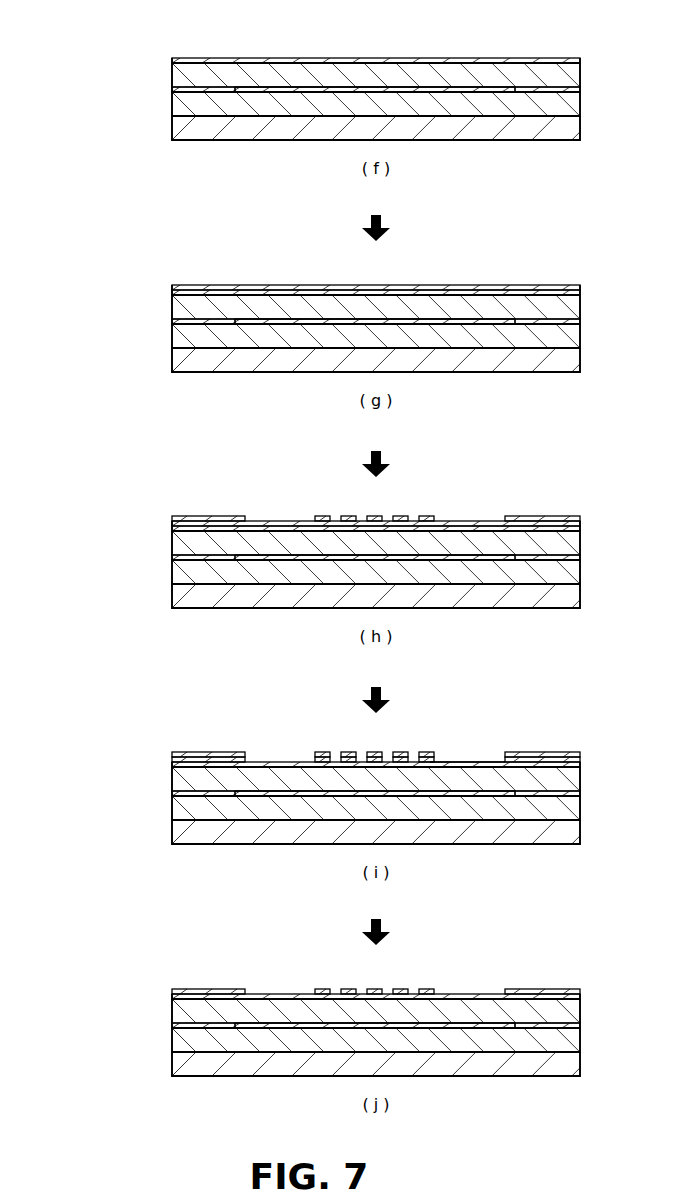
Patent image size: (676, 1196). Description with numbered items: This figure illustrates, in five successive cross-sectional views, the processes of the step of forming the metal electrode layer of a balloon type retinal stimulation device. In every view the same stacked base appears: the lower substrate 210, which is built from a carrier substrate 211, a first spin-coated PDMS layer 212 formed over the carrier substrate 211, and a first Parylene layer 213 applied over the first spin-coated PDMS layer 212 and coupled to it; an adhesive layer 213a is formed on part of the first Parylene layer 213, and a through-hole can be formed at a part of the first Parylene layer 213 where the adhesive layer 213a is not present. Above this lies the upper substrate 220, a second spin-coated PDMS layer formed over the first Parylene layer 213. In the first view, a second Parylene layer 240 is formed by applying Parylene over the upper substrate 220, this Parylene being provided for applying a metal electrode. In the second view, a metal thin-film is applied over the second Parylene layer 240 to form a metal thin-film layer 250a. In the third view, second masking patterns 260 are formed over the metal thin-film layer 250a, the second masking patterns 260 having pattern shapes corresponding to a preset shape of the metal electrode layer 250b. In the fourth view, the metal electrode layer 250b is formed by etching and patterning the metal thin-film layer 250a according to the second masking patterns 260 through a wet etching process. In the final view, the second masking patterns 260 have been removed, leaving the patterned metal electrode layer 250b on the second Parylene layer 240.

The lower substrate 210 is at (309, 595).
The carrier substrate 211 is at (178, 132).
The first spin-coated PDMS layer 212 is at (178, 107).
The first Parylene layer 213 is at (266, 90).
The adhesive layer 213a is at (173, 90).
The upper substrate 220 is at (177, 75).
The second Parylene layer 240 is at (173, 61).
The metal thin-film layer 250a is at (173, 287).
The metal electrode layer 250b is at (430, 761).
The second masking patterns 260 is at (513, 515).